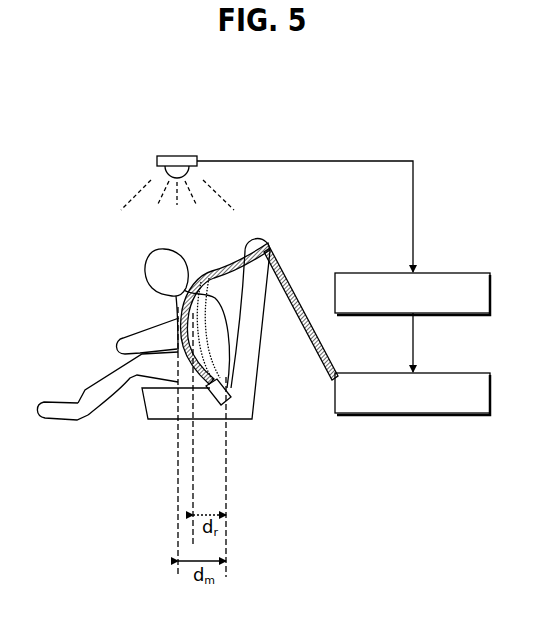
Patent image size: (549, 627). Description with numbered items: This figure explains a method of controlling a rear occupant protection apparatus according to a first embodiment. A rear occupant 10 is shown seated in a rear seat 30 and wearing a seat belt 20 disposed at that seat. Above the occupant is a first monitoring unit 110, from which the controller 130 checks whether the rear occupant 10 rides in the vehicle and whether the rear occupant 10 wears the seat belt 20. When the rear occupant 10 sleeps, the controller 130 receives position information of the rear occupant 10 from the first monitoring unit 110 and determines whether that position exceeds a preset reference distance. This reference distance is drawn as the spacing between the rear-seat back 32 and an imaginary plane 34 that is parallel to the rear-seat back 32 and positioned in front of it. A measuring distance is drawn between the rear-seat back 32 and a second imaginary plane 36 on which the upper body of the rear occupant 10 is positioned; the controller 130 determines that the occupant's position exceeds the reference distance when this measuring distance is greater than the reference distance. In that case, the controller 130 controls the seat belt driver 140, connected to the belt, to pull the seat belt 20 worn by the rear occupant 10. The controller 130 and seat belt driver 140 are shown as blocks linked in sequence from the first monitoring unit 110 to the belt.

The first monitoring unit 110 is at (177, 155).
The rear occupant 10 is at (163, 250).
The seat belt 20 is at (213, 262).
The rear seat 30 is at (263, 252).
The rear-seat back 32 is at (231, 454).
The imaginary plane 34 is at (198, 480).
The imaginary plane 36 is at (175, 473).
The controller 130 is at (447, 273).
The seat belt driver 140 is at (447, 373).